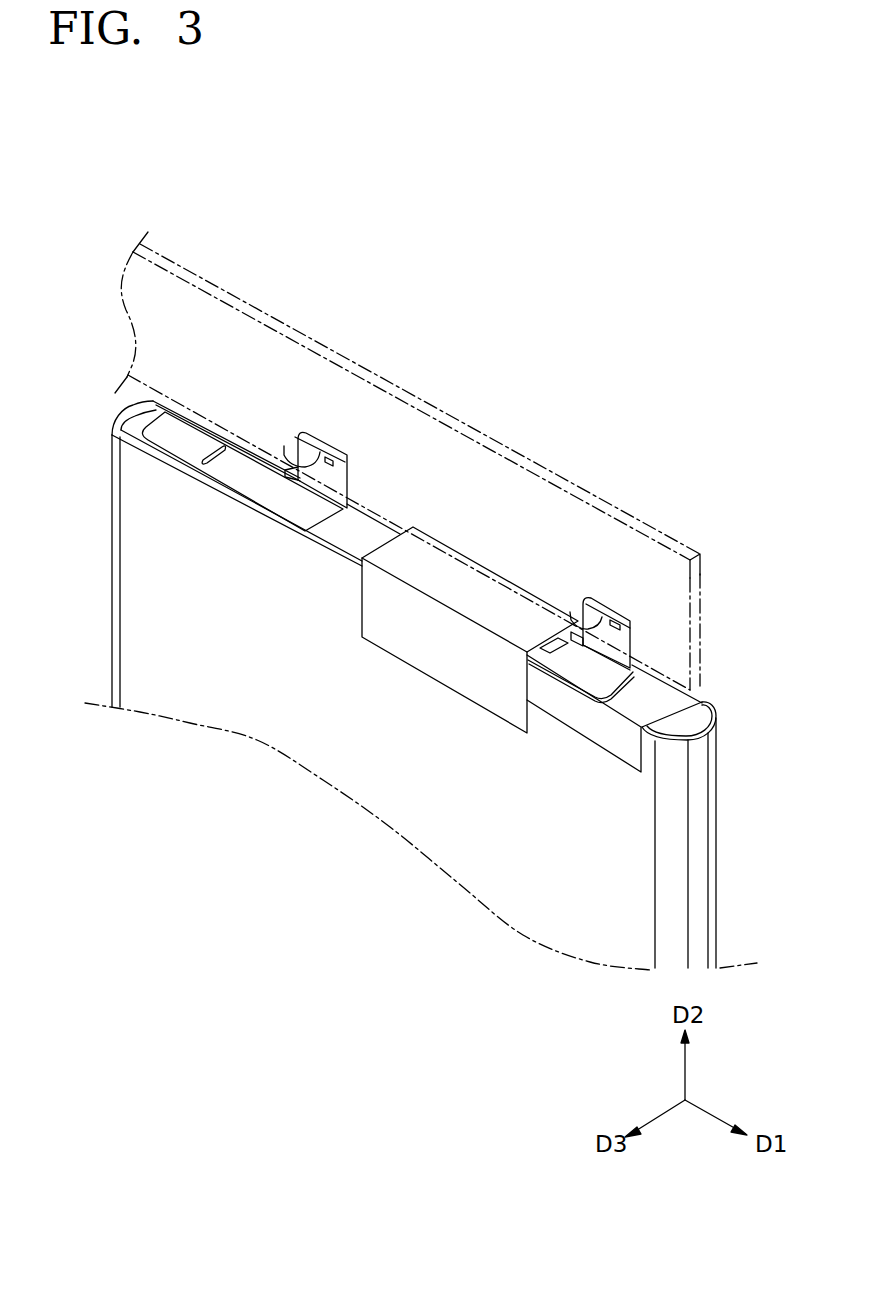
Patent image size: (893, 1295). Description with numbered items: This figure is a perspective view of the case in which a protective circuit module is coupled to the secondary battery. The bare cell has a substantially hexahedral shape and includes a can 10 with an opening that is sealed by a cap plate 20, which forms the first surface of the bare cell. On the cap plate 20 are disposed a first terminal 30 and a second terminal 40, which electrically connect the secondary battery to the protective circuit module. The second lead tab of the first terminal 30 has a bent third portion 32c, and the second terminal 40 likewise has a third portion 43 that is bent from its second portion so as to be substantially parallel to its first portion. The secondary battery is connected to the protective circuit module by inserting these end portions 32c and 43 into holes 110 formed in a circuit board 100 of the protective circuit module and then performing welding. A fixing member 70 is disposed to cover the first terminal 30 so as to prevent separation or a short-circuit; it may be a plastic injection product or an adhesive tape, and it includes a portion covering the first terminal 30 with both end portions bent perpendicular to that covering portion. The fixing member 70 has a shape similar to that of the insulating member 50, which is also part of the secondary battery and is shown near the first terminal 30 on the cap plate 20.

The can 10 is at (130, 626).
The cap plate 20 is at (126, 419).
The first terminal 30 is at (578, 676).
The third portion 32c is at (573, 613).
The second terminal 40 is at (237, 479).
The third portion 43 is at (291, 449).
The insulating member 50 is at (611, 752).
The fixing member 70 is at (440, 665).
The circuit board 100 is at (468, 418).
The holes 110 is at (312, 447).